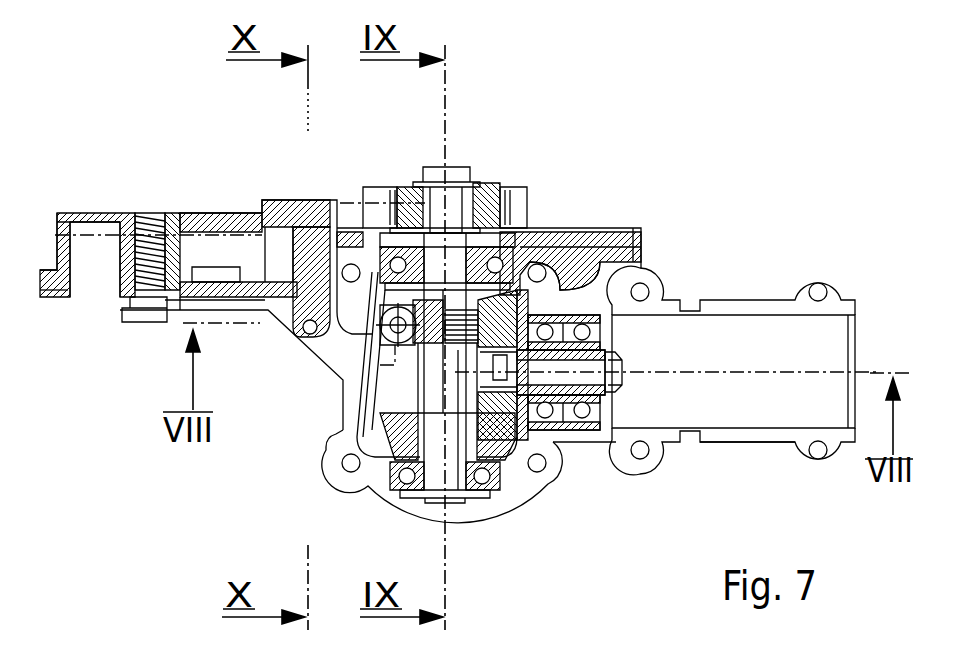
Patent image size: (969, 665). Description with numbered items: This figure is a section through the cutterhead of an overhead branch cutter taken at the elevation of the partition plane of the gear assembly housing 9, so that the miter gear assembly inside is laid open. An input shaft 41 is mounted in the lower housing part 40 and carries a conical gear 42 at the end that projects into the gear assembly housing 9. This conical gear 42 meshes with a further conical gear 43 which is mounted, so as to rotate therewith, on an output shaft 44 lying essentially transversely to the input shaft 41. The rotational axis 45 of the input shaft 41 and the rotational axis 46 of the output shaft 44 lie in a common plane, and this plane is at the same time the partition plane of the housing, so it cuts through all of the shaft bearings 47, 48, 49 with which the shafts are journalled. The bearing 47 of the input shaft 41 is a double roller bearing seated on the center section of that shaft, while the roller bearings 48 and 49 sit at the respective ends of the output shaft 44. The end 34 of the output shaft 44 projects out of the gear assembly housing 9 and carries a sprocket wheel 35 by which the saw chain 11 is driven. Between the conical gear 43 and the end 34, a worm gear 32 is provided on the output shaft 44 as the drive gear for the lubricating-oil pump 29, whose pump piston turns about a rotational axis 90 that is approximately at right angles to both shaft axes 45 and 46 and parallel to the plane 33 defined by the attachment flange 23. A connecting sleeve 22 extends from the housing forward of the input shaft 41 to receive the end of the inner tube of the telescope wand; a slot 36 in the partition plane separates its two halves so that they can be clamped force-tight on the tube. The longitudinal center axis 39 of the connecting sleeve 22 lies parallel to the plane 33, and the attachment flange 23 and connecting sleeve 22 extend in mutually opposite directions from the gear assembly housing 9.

The gear assembly housing 9 is at (312, 458).
The saw chain 11 is at (345, 203).
The connecting sleeve 22 is at (752, 435).
The attachment flange 23 is at (172, 222).
The lubricating-oil pump 29 is at (358, 332).
The worm gear 32 is at (462, 318).
The plane 33 is at (87, 235).
The end 34 is at (440, 172).
The sprocket wheel 35 is at (378, 200).
The slot 36 is at (748, 302).
The longitudinal center axis 39 is at (840, 372).
The lower housing part 40 is at (595, 443).
The input shaft 41 is at (622, 348).
The conical gear 42 is at (565, 290).
The conical gear 43 is at (365, 428).
The output shaft 44 is at (447, 494).
The rotational axis 45 is at (622, 378).
The rotational axis 46 is at (440, 505).
The bearing 47 is at (570, 432).
The roller bearing 48 is at (490, 486).
The roller bearing 49 is at (458, 292).
The rotational axis 90 is at (400, 355).